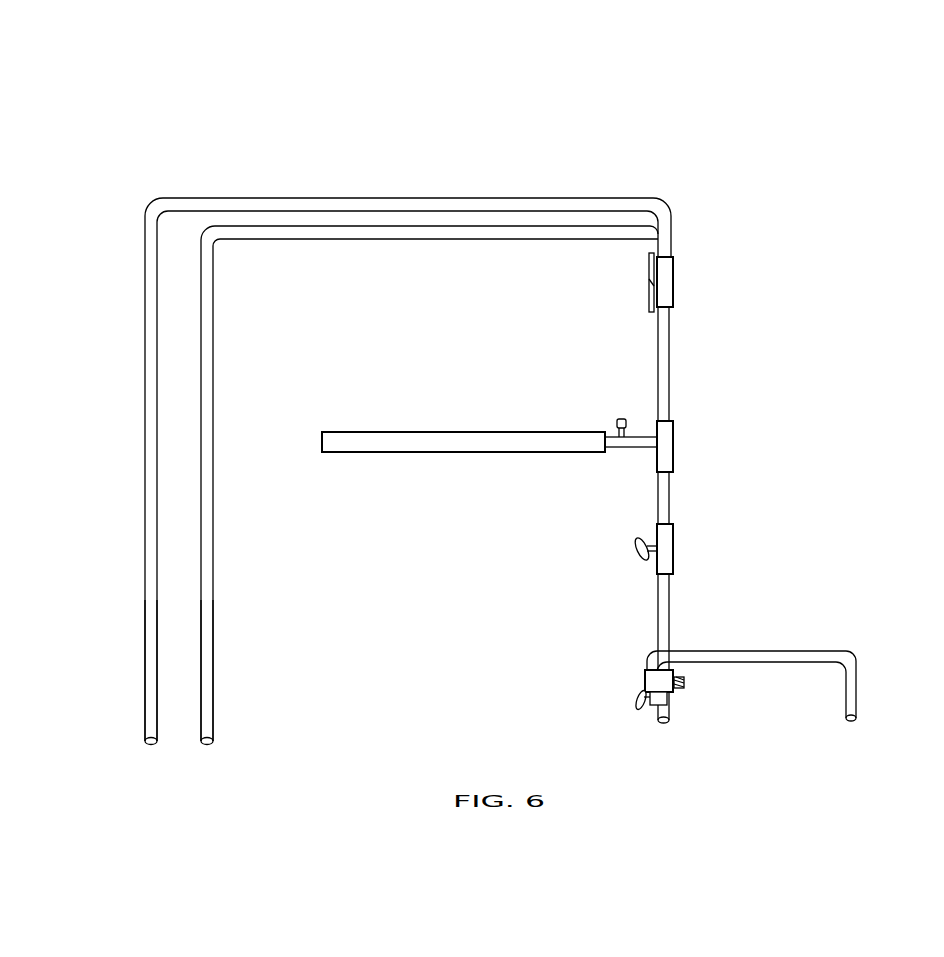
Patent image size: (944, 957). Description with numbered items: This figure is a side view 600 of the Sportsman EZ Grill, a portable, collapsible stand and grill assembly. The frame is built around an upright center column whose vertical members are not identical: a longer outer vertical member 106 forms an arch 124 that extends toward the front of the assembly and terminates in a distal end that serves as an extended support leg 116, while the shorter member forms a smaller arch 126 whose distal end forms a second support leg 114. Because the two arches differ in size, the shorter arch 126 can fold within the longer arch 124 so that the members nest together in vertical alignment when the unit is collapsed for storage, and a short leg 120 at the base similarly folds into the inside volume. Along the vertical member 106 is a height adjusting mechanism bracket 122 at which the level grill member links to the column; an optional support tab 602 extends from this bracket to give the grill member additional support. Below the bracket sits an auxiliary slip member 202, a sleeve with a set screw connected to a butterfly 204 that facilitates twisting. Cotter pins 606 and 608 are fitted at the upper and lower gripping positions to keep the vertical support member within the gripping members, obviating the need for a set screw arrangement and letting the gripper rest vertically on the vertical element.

The side view 600 is at (236, 145).
The arch of longer member 124 is at (466, 205).
The arch of shorter member 126 is at (376, 238).
The longer outer vertical member 106 is at (670, 345).
The short leg 120 is at (714, 652).
The cotter pin 606 is at (636, 268).
The support tab 602 is at (648, 452).
The height adjusting mechanism bracket 122 is at (670, 452).
The auxiliary slip member 202 is at (670, 550).
The butterfly 204 is at (620, 418).
The cotter pin 608 is at (640, 690).
The distal end / extended support leg 114 is at (205, 713).
The distal end / extended support leg 116 is at (143, 713).